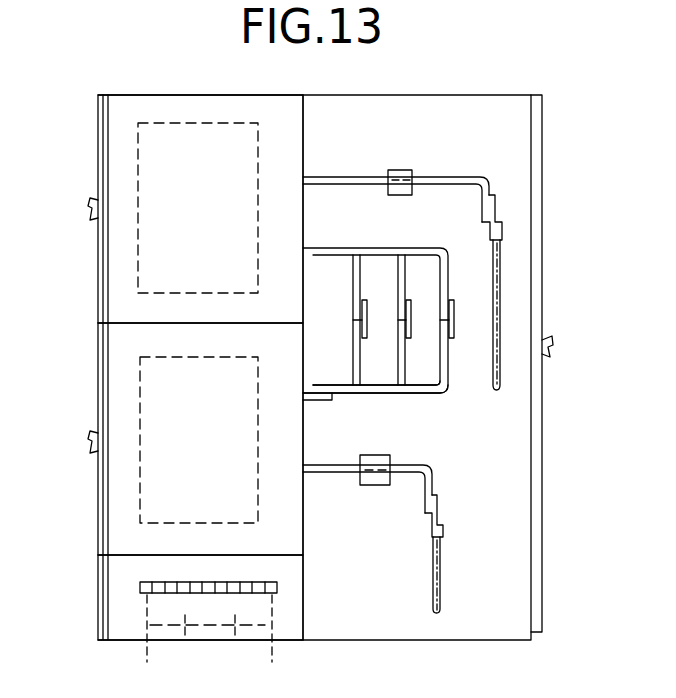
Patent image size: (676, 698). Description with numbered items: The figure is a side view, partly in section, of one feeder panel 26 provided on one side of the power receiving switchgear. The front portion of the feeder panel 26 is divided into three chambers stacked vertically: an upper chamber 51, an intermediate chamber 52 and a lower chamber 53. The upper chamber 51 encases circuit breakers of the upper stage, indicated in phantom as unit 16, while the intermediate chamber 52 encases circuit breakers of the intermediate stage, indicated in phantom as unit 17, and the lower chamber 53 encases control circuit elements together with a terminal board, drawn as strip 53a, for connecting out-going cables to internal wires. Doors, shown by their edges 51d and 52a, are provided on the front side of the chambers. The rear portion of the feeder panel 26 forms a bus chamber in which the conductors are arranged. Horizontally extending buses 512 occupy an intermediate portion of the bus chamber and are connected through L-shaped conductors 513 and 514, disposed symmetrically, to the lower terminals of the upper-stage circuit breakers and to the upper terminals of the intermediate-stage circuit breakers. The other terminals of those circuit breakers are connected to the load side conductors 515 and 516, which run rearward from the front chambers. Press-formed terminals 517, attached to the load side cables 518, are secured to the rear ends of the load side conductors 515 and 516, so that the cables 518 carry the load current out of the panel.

The upper chamber 51 is at (136, 105).
The door edge of upper compartment 51d is at (98, 150).
The upper unit (phantom) 16 is at (212, 122).
The feeder panel 26 is at (361, 95).
The intermediate chamber 52 is at (118, 348).
The door 52a is at (100, 385).
The lower unit (phantom) 17 is at (140, 488).
The lower chamber 53 is at (117, 572).
The door 53a is at (98, 600).
The horizontal buses 512 is at (455, 312).
The L-shaped conductor 513 is at (461, 319).
The L-shaped conductor 514 is at (448, 387).
The load side conductor 515 is at (464, 177).
The load side conductor 516 is at (433, 474).
The press-formed terminals 517 is at (503, 222).
The load side cables 518 is at (500, 270).